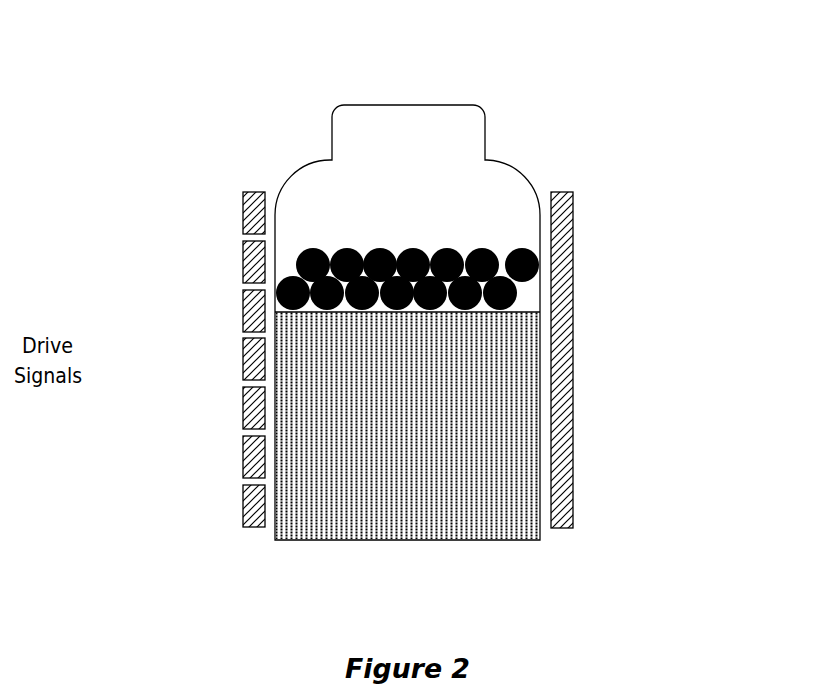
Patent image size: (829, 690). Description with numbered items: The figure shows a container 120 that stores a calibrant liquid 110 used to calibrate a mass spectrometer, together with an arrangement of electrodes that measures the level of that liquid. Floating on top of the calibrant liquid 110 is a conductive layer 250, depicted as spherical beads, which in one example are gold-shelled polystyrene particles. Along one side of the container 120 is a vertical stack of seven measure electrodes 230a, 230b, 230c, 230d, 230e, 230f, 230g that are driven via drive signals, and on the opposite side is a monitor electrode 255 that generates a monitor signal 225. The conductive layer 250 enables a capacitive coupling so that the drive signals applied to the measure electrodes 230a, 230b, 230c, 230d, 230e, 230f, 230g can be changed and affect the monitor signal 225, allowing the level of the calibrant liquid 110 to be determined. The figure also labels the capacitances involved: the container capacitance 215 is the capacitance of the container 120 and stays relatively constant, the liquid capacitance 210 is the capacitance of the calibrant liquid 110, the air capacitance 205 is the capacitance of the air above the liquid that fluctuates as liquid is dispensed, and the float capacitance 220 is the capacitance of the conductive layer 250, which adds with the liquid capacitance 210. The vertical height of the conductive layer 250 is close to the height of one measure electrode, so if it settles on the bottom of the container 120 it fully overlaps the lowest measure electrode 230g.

The container 120 is at (363, 68).
The calibrant liquid 110 is at (470, 520).
The conductive layer 250 is at (490, 215).
The monitor electrode 255 is at (576, 314).
The monitor signal 225 is at (573, 360).
The measure electrode 230a is at (243, 213).
The measure electrode 230b is at (243, 262).
The measure electrode 230c is at (243, 311).
The measure electrode 230d is at (243, 359).
The measure electrode 230e is at (243, 408).
The measure electrode 230f is at (243, 457).
The measure electrode 230g is at (243, 506).
The air capacitance 205 is at (443, 186).
The float capacitance 220 is at (450, 234).
The liquid capacitance 210 is at (453, 436).
The container capacitance 215 is at (465, 579).